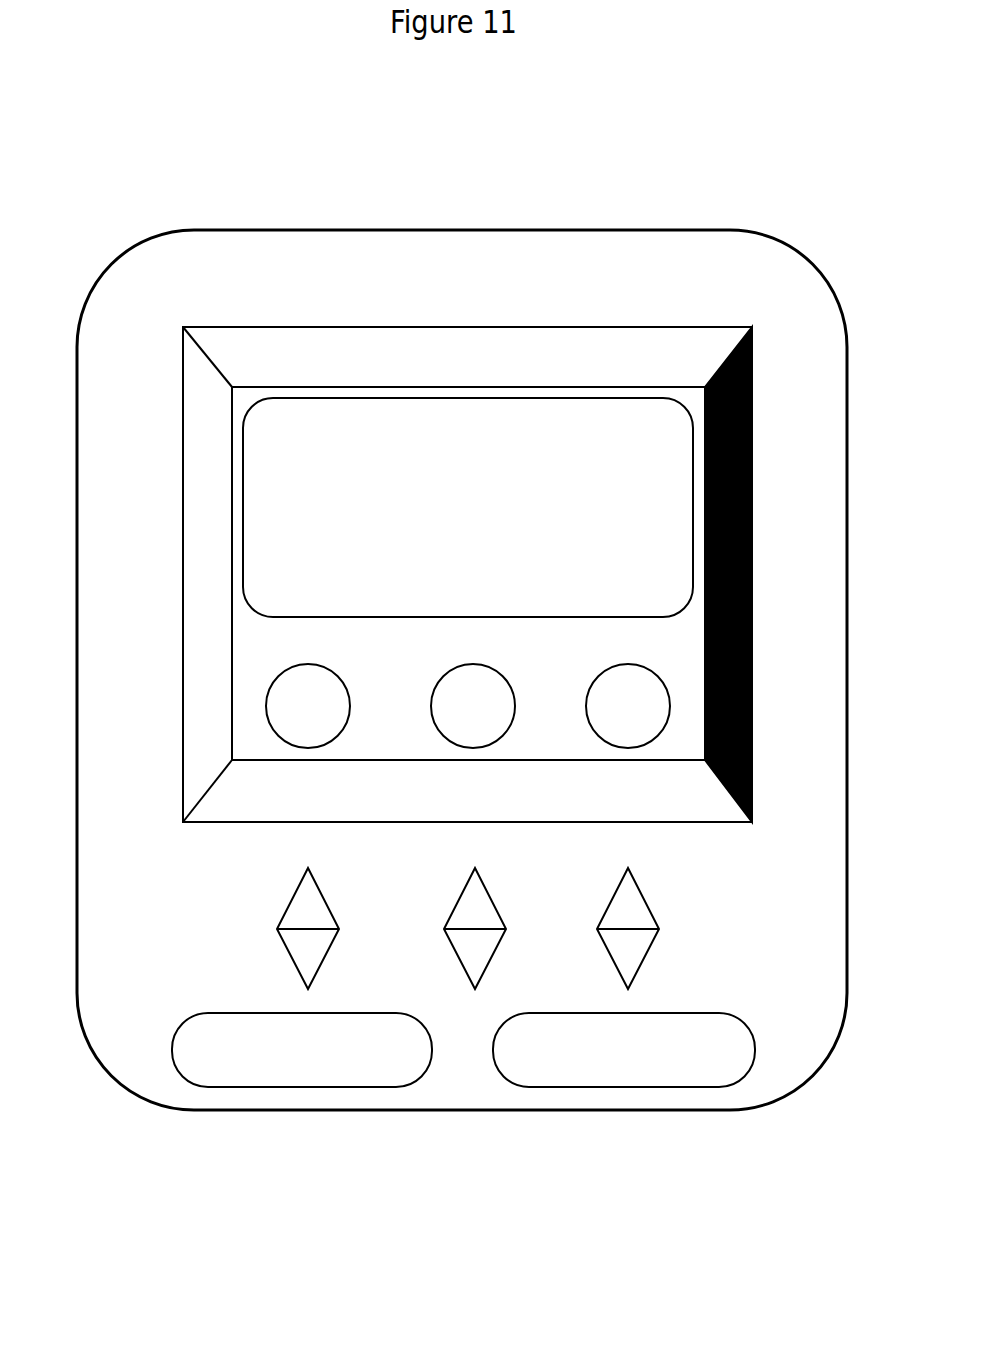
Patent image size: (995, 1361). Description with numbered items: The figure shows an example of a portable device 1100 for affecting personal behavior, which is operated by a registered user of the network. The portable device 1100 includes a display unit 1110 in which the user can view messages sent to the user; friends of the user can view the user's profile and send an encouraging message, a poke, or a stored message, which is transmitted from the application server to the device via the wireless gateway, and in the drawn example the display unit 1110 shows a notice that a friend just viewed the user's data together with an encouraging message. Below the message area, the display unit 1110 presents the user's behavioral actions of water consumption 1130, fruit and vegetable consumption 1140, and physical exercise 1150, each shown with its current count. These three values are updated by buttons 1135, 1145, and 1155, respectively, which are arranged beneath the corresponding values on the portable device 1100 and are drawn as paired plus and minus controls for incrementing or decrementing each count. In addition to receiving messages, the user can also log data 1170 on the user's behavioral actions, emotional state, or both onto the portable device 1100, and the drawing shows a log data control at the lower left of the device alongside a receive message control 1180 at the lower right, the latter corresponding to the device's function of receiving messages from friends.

The portable device 1100 is at (131, 1235).
The display unit 1110 is at (673, 303).
The water consumption 1130 is at (303, 748).
The fruit and vegetable consumption 1140 is at (468, 748).
The physical exercise 1150 is at (623, 748).
The button 1135 is at (258, 947).
The button 1145 is at (428, 948).
The button 1155 is at (584, 948).
The log data 1170 is at (318, 1100).
The receive message button 1180 is at (637, 1100).